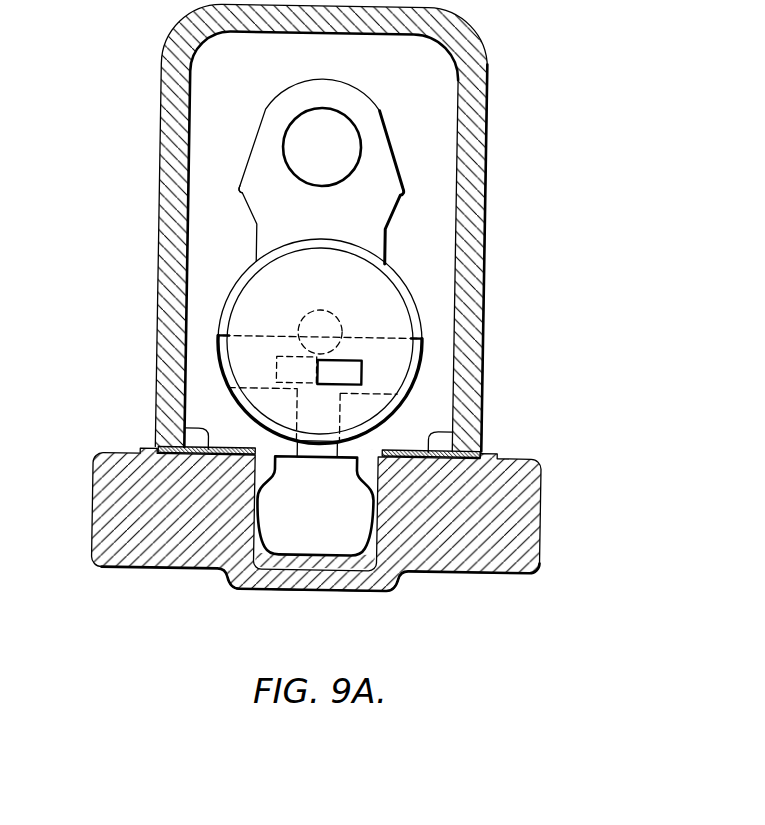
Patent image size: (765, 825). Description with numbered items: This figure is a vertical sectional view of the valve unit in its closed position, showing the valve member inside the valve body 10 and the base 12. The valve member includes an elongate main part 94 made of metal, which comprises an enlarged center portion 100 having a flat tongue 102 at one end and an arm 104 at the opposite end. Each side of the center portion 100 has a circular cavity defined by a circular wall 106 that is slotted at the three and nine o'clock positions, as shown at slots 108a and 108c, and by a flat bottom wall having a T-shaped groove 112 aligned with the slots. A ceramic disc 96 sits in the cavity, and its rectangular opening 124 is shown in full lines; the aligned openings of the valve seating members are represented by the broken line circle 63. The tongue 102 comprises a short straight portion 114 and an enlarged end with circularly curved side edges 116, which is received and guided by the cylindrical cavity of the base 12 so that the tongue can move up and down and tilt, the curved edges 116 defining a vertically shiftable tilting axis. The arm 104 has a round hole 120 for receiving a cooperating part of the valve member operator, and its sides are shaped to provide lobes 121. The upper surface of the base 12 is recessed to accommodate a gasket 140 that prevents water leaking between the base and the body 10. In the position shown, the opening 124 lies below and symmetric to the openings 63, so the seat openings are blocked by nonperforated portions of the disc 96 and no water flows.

The valve body 10 is at (157, 81).
The base 12 is at (95, 507).
The broken line circle 63 is at (330, 311).
The main part 94 is at (406, 177).
The disc 96 is at (393, 312).
The center portion 100 is at (238, 273).
The tongue 102 is at (341, 526).
The arm 104 is at (253, 138).
The circular wall 106 is at (392, 272).
The slot 108a is at (422, 345).
The slot 108c is at (218, 339).
The T-shaped groove 112 is at (266, 334).
The short straight portion 114 is at (374, 438).
The circularly curved side edges 116 is at (229, 576).
The round hole 120 is at (347, 119).
The lobes 121 is at (237, 190).
The rectangular opening 124 is at (357, 371).
The gasket 140 is at (460, 450).